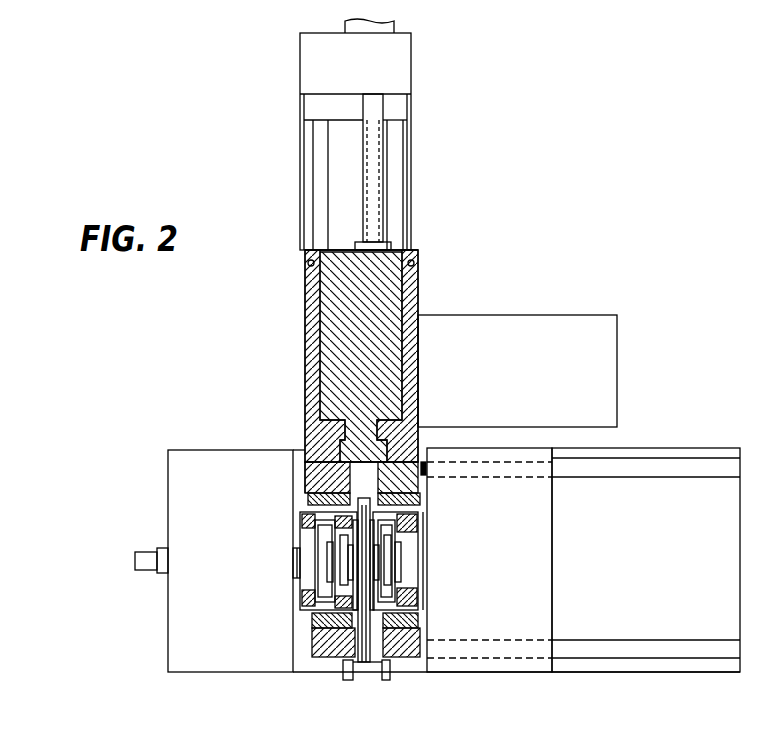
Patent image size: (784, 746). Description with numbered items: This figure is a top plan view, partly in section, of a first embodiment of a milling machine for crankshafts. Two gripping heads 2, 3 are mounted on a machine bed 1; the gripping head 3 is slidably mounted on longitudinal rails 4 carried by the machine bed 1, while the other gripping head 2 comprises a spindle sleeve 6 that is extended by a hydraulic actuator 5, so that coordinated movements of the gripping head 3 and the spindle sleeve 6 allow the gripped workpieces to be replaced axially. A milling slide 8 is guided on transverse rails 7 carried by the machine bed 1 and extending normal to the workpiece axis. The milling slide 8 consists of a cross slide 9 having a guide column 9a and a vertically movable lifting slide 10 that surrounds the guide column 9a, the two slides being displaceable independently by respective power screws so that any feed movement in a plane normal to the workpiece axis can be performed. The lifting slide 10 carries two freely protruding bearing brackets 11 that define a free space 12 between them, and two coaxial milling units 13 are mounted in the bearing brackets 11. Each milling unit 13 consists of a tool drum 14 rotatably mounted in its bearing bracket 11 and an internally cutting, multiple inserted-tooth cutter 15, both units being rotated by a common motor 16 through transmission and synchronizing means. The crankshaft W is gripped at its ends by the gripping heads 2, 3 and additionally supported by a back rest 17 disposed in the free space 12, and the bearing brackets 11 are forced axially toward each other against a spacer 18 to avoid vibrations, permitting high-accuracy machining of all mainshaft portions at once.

The machine bed 1 is at (677, 502).
The gripping head 2 is at (203, 470).
The gripping head 3 is at (532, 545).
The longitudinal rails 4 is at (665, 467).
The hydraulic actuator 5 is at (148, 555).
The spindle sleeve 6 is at (293, 560).
The transverse rails 7 is at (397, 154).
The milling slide 8 is at (303, 355).
The cross slide 9 is at (413, 257).
The guide column 9a is at (372, 300).
The lifting slide 10 is at (305, 302).
The bearing brackets 11 is at (317, 642).
The free space 12 is at (305, 450).
The milling units 13 is at (420, 527).
The tool drum 14 is at (317, 497).
The inserted-tooth cutter 15 is at (305, 523).
The motor 16 is at (598, 347).
The back rest 17 is at (420, 502).
The spacer 18 is at (365, 670).
The crankshaft W is at (422, 553).